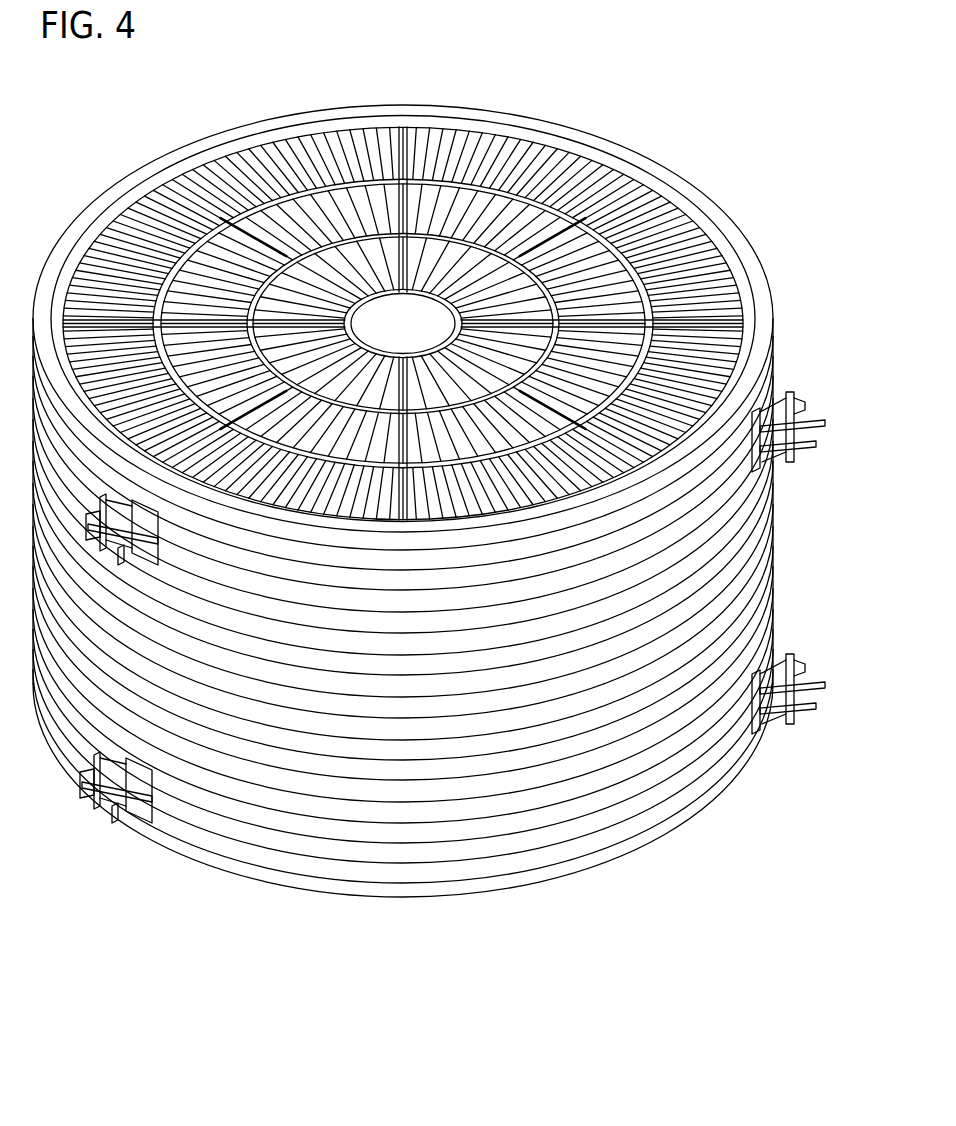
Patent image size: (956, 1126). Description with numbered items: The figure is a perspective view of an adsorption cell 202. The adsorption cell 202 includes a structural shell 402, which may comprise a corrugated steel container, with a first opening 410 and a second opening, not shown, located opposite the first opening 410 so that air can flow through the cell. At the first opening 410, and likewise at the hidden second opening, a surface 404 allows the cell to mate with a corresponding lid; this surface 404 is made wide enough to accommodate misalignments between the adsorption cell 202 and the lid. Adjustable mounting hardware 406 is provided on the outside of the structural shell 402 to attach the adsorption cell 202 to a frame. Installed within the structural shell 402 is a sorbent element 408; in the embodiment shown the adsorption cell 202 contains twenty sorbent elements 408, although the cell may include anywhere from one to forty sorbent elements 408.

The adsorption cell 202 is at (626, 89).
The structural shell 402 is at (300, 757).
The surface 404 is at (752, 262).
The adjustable mounting hardware 406 is at (809, 464).
The sorbent element 408 is at (664, 225).
The first opening 410 is at (136, 228).